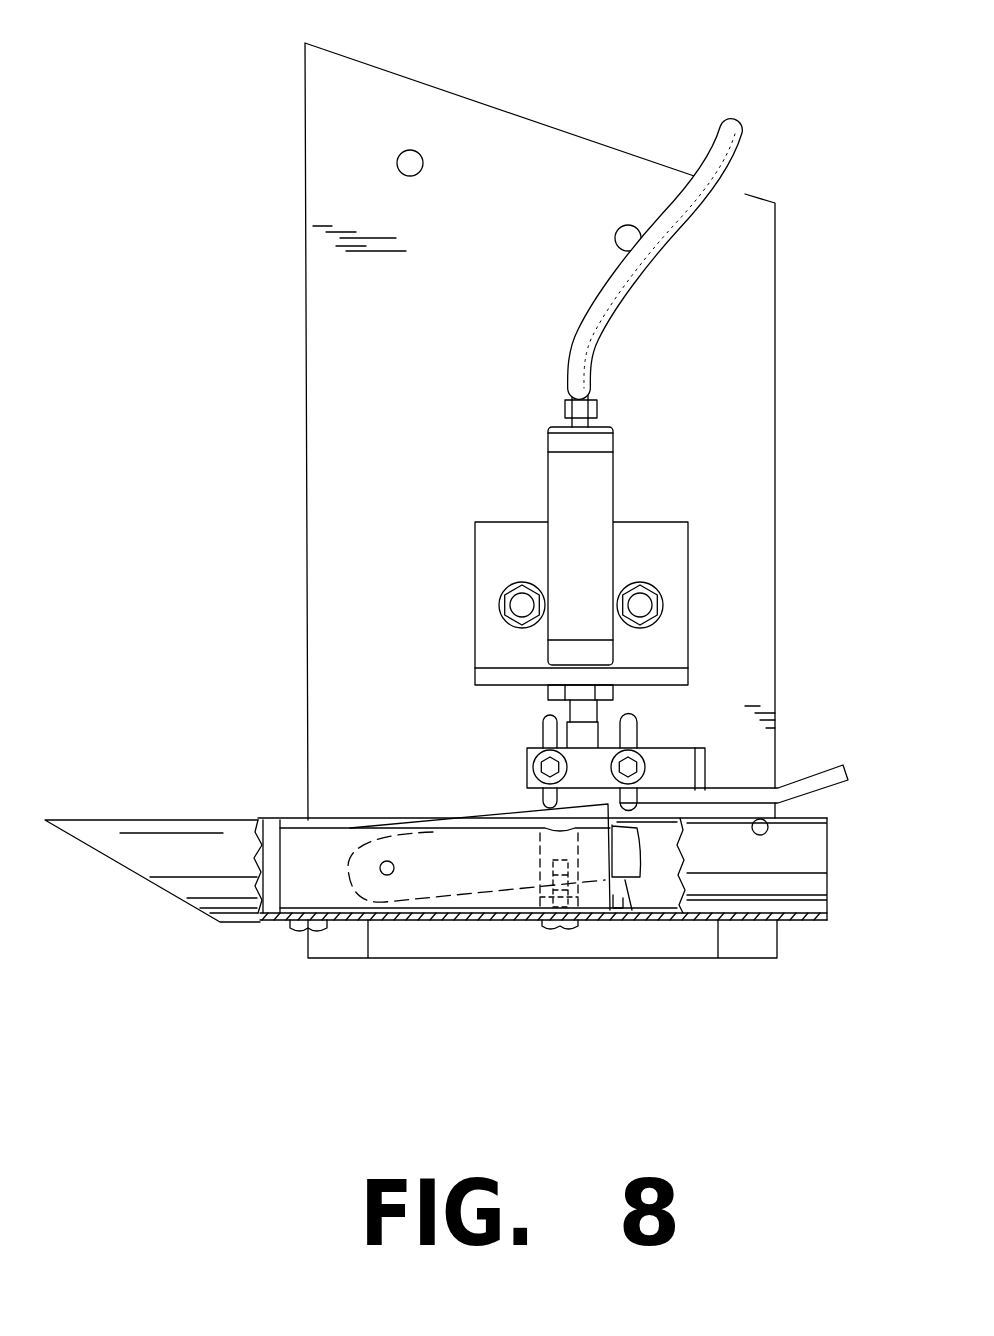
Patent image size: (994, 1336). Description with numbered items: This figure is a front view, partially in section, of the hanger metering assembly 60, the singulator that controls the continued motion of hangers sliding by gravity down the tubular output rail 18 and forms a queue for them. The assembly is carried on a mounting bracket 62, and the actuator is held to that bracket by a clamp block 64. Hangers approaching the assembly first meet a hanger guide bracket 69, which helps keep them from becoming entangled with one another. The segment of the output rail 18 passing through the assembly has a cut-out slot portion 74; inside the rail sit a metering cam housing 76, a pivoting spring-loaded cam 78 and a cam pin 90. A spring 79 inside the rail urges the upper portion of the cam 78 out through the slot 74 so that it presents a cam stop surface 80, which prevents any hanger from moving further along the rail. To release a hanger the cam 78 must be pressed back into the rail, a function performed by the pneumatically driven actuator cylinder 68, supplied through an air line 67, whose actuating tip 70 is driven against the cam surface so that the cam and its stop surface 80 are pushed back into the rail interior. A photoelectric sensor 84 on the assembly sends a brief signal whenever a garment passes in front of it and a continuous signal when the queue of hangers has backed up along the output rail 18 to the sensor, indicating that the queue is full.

The output rail 18 is at (150, 860).
The hanger metering assembly 60 is at (543, 90).
The mounting bracket 62 is at (797, 306).
The bracket 64 is at (668, 570).
The air line 67 is at (617, 280).
The actuator cylinder 68 is at (598, 492).
The hanger guide bracket 69 is at (830, 765).
The actuating tip 70 is at (582, 765).
The cut-out slot portion 74 is at (388, 827).
The metering cam housing 76 is at (622, 922).
The cam 78 is at (640, 917).
The spring 79 is at (537, 897).
The cam stop surface 80 is at (632, 810).
The photoelectric sensor 84 is at (767, 828).
The cam pin 90 is at (395, 868).